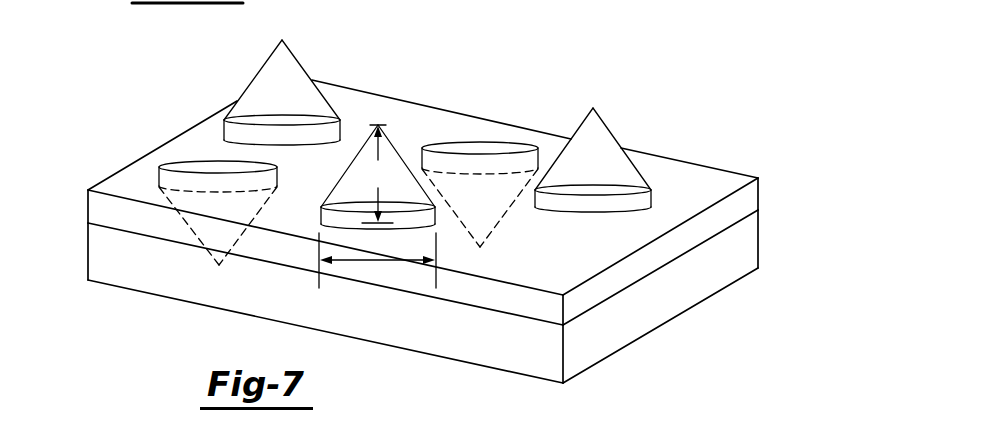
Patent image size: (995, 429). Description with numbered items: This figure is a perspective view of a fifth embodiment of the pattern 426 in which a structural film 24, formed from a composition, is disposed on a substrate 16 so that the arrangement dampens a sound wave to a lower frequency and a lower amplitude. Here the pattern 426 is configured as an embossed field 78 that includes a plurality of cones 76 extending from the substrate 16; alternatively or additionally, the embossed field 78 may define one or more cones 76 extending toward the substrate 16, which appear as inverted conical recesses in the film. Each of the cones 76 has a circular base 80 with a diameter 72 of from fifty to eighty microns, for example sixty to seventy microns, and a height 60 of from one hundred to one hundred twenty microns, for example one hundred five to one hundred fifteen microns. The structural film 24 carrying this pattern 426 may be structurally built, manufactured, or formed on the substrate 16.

The pattern 426 is at (113, 99).
The substrate 16 is at (740, 245).
The structural film 24 is at (752, 188).
The cones 76 is at (512, 64).
The embossed field 78 is at (358, 187).
The circular base 80 is at (330, 130).
The height 60 is at (377, 174).
The diameter 72 is at (377, 260).